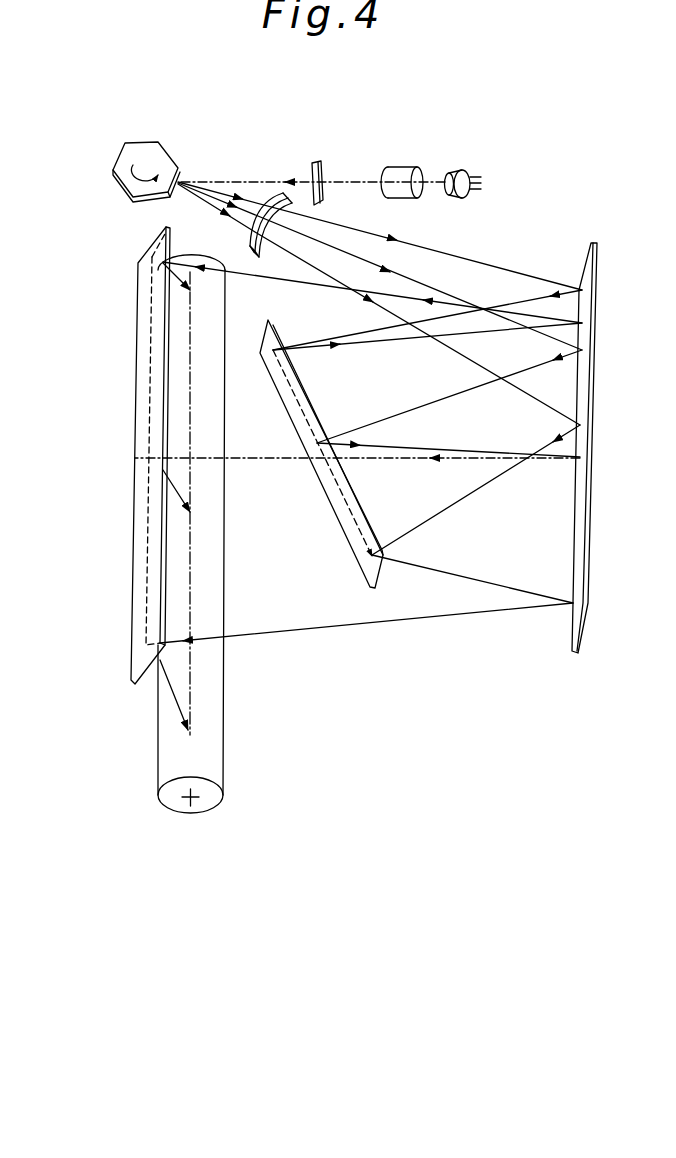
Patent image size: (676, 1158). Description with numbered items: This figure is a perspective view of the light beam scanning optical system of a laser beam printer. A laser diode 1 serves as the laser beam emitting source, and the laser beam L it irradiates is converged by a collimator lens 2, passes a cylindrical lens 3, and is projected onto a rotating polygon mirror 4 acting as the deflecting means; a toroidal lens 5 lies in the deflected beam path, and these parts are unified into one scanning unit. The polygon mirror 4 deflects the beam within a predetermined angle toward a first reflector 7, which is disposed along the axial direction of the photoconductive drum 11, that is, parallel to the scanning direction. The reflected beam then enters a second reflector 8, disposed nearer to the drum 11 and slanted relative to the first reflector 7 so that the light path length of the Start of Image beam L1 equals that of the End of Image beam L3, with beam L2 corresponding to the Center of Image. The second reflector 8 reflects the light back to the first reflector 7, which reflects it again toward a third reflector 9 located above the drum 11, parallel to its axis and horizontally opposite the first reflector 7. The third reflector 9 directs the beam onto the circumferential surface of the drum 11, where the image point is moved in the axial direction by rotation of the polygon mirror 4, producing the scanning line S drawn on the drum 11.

The laser diode 1 is at (467, 170).
The collimator lens 2 is at (407, 167).
The cylindrical lens 3 is at (325, 162).
The polygon mirror 4 is at (138, 153).
The toroidal lens 5 is at (271, 188).
The first reflector 7 is at (575, 656).
The second reflector 8 is at (368, 590).
The third reflector 9 is at (137, 643).
The photoconductive drum 11 is at (215, 722).
The scanning line S is at (190, 670).
The laser beam L is at (303, 173).
The SOI laser beam L1 is at (333, 278).
The COI laser beam L2 is at (528, 270).
The EOI laser beam L3 is at (580, 258).